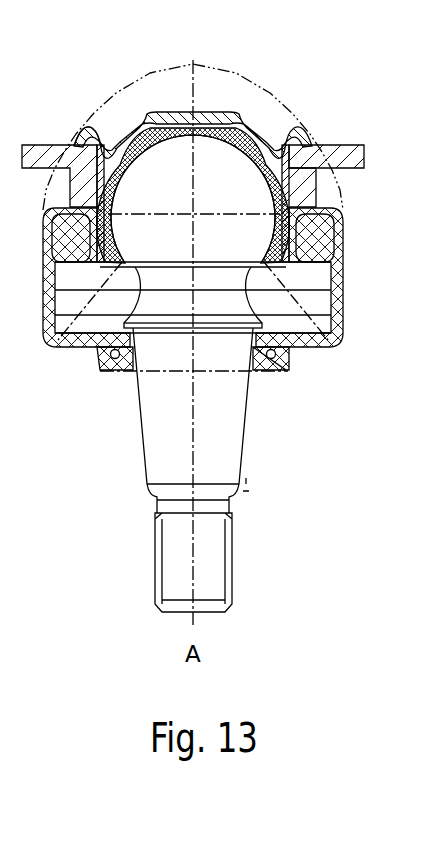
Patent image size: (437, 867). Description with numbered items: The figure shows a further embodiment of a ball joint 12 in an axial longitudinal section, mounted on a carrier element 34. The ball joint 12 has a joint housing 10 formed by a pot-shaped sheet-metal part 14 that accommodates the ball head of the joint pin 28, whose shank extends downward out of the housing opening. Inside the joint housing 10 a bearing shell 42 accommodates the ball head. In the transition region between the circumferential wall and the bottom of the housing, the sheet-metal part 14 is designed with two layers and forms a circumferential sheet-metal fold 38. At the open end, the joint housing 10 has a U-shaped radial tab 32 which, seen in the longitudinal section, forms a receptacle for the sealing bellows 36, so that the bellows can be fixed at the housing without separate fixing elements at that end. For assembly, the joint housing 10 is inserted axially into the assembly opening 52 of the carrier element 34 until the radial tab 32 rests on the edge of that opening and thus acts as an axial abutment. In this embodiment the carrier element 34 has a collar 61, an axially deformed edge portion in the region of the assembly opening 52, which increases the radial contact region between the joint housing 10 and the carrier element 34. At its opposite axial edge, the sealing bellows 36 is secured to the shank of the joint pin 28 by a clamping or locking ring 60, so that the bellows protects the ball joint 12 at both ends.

The joint housing 10 is at (245, 102).
The sheet-metal part 14 is at (191, 120).
The ball joint 12 is at (95, 447).
The joint pin 28 is at (261, 388).
The radial tab 32 is at (349, 234).
The carrier element 34 is at (355, 156).
The sealing bellows 36 is at (327, 345).
The sheet-metal fold 38 is at (302, 133).
The bearing shell 42 is at (115, 185).
The assembly opening 52 is at (98, 139).
The clamping or locking ring 60 is at (110, 355).
The collar 61 is at (306, 190).